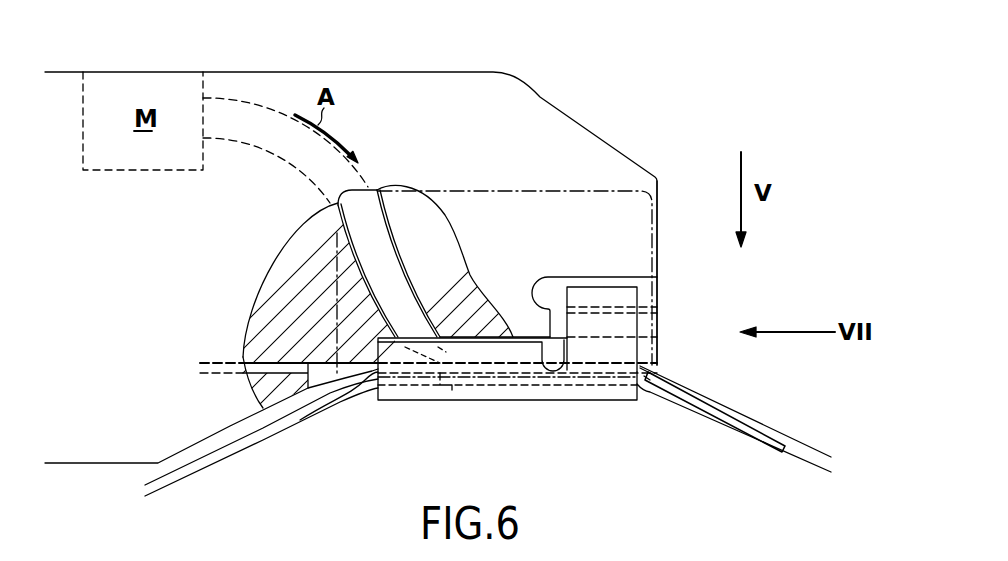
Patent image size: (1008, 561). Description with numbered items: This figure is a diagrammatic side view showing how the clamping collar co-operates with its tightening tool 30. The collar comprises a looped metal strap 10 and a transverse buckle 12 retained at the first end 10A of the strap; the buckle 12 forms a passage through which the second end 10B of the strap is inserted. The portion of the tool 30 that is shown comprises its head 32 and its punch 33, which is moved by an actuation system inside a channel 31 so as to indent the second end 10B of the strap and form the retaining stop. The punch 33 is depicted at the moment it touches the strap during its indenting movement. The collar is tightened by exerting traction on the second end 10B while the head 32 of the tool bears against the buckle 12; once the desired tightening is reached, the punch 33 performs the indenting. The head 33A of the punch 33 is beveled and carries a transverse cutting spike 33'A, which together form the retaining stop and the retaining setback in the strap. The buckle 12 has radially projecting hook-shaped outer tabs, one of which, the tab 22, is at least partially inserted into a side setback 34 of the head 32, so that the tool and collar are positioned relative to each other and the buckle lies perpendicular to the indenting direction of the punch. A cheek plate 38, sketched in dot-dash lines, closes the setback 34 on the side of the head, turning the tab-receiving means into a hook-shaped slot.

The tool 30 is at (573, 92).
The cheek plate 38 is at (628, 190).
The head 32 is at (659, 228).
The side setback 34 is at (601, 287).
The outer tab 22 is at (617, 325).
The punch 33 is at (447, 313).
The channel 31 is at (417, 307).
The second end of the strap 10B is at (267, 371).
The head of the punch 33A is at (401, 363).
The transverse cutting spike 33'A is at (458, 398).
The buckle 12 is at (554, 404).
The first end of the strap 10A is at (728, 418).
The strap 10 is at (813, 447).